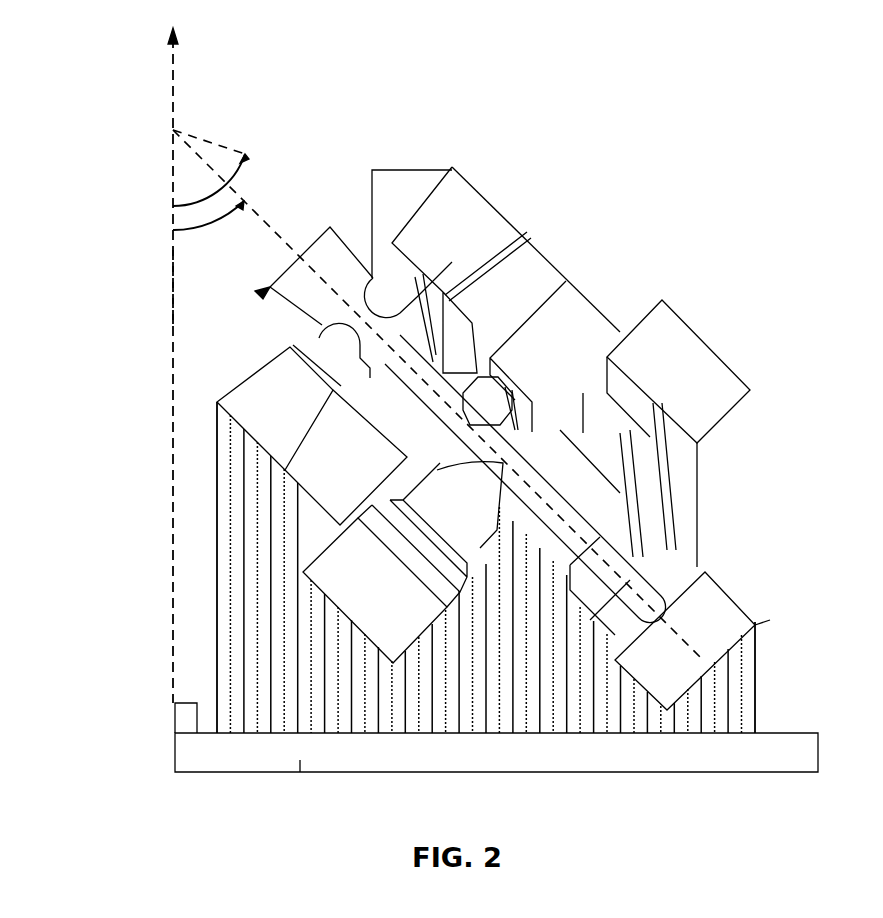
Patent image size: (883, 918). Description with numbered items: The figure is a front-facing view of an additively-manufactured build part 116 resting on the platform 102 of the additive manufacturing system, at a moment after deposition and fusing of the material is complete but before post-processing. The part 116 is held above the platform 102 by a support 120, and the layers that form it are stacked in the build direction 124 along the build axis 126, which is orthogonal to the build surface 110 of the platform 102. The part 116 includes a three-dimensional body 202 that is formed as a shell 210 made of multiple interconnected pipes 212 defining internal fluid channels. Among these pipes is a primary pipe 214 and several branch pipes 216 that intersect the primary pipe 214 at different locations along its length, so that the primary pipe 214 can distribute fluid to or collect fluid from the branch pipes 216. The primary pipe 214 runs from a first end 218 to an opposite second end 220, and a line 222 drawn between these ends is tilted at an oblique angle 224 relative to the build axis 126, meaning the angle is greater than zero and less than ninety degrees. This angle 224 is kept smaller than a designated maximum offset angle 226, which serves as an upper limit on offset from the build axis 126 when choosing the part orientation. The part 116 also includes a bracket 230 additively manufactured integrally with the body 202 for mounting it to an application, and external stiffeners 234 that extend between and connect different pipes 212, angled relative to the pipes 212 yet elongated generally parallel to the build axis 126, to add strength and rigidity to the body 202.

The platform 102 is at (300, 766).
The build surface 110 is at (780, 733).
The additively-manufactured build part 116 is at (372, 205).
The support 120 is at (258, 668).
The build direction 124 is at (171, 76).
The build axis 126 is at (172, 296).
The three-dimensional body 202 is at (680, 527).
The shell 210 is at (487, 350).
The pipes 212 is at (433, 227).
The primary pipe 214 is at (445, 385).
The branch pipes 216 is at (390, 618).
The first end 218 is at (760, 633).
The second end 220 is at (262, 292).
The line 222 is at (275, 230).
The oblique angle 224 is at (192, 232).
The maximum offset angle 226 is at (192, 186).
The bracket 230 is at (385, 177).
The external stiffeners 234 is at (432, 313).